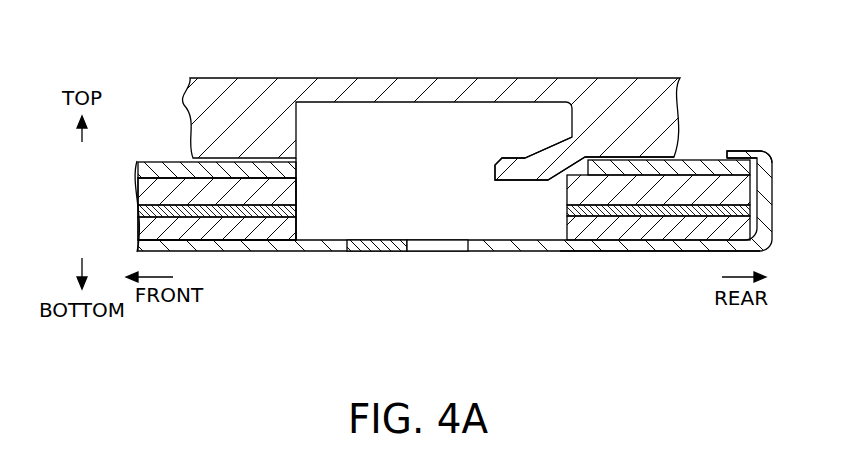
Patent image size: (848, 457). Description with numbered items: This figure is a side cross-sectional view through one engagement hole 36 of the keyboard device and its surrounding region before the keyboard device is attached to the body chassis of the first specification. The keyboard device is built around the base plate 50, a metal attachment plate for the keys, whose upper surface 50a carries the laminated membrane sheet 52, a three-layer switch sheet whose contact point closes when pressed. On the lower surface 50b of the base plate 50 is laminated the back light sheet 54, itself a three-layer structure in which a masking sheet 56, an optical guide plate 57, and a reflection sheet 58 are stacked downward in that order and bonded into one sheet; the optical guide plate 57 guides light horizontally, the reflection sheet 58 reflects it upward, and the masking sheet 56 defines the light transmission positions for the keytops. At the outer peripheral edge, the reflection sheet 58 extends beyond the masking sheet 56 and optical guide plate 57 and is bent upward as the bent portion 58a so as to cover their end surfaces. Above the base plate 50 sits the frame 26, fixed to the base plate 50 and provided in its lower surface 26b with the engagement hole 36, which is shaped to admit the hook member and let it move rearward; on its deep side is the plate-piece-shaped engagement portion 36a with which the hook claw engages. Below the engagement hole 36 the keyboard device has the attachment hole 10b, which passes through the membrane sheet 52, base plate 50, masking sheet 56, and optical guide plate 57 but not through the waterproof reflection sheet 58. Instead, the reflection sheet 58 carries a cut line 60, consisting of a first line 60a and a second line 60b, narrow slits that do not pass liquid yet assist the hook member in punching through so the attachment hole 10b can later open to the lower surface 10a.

The lower surface 10a is at (636, 252).
The attachment hole 10b is at (330, 205).
The frame 26 is at (610, 82).
The lower surface 26b is at (672, 157).
The engagement hole 36 is at (496, 104).
The engagement portion 36a is at (510, 162).
The base plate 50 is at (735, 188).
The upper surface 50a is at (240, 170).
The lower surface 50b is at (240, 220).
The membrane sheet 52 is at (737, 168).
The back light sheet 54 is at (55, 176).
The masking sheet 56 is at (138, 192).
The optical guide plate 57 is at (138, 212).
The reflection sheet 58 is at (138, 229).
The bent portion 58a is at (752, 150).
The cut line 60 is at (407, 297).
The first line 60a is at (437, 276).
The second line 60b is at (393, 252).